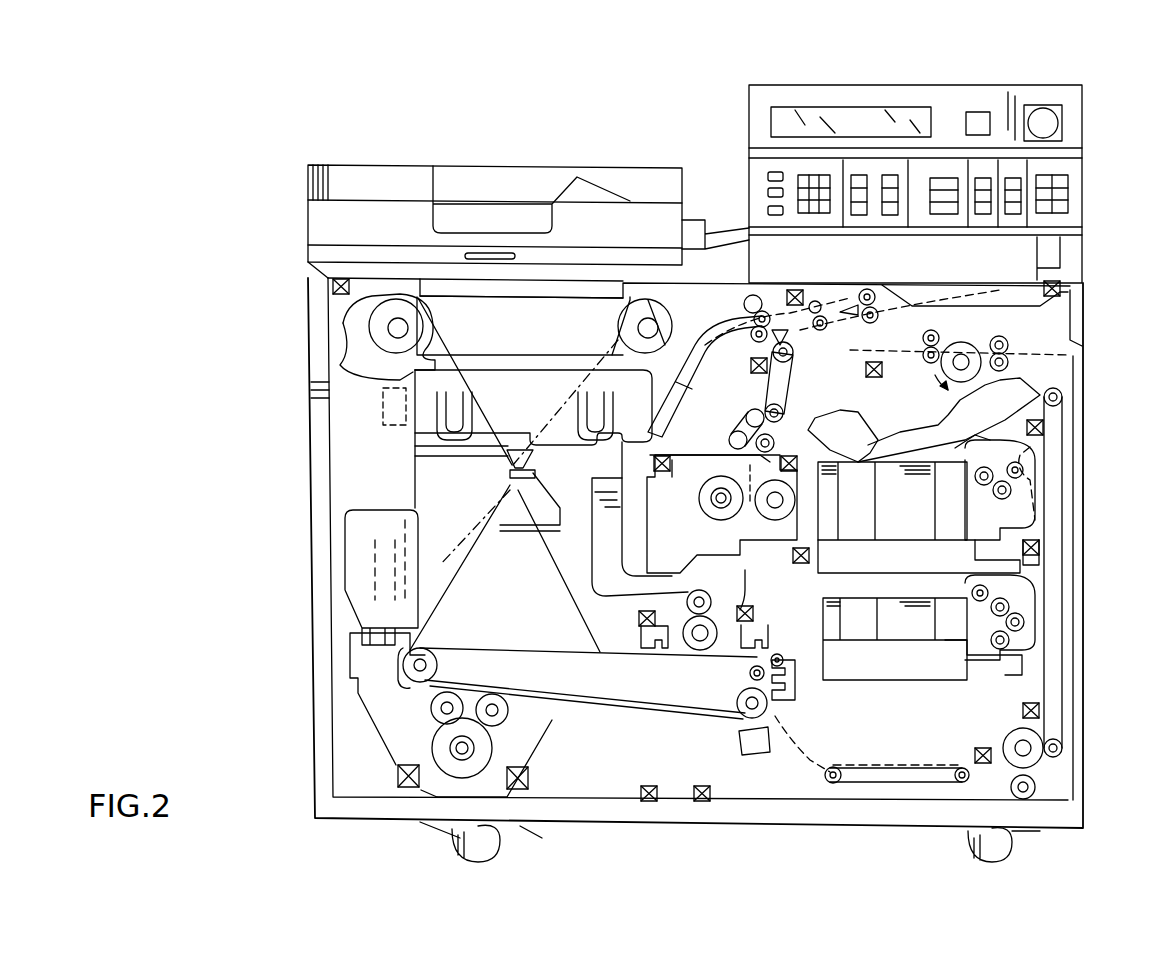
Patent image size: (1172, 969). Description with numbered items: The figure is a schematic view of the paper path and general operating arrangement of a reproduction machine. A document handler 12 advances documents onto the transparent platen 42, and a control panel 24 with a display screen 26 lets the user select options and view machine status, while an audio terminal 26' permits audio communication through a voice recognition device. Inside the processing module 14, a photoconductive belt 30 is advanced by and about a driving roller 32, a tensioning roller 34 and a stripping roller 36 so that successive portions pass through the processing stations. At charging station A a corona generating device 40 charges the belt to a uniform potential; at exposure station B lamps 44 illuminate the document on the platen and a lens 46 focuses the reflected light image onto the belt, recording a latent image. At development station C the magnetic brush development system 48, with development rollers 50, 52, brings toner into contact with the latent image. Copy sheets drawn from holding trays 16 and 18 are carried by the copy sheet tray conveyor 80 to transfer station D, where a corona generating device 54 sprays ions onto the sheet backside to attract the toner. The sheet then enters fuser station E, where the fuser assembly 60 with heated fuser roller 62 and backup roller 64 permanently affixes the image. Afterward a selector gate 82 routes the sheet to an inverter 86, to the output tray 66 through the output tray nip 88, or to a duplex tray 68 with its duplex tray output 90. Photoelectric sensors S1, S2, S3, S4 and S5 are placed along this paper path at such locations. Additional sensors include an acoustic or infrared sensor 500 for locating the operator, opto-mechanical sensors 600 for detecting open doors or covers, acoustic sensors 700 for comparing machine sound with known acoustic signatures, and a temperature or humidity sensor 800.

The document handler 12 is at (424, 158).
The processing module 14 is at (745, 268).
The control panel 24 is at (968, 80).
The display screen 26 is at (851, 83).
The audio terminal 26' is at (1082, 105).
The acoustic or infrared sensor 500 is at (983, 110).
The opto-mechanical sensor 600 is at (340, 285).
The transparent platen 42 is at (600, 283).
The inverter 86 is at (697, 332).
The photoelectric sensor S4 is at (789, 290).
The output tray nip 88 is at (822, 316).
The selector gate 82 is at (786, 343).
The output tray 66 is at (1005, 310).
The duplex tray 68 is at (1025, 395).
The temperature or humidity sensor 800 is at (875, 378).
The photoelectric sensor S3 is at (750, 366).
The fuser station E is at (714, 445).
The duplex tray output 90 is at (1060, 448).
The lamps 44 is at (390, 430).
The heated fuser roller 62 is at (718, 498).
The backup roller 64 is at (776, 498).
The photoelectric sensor S5 is at (1030, 420).
The fuser assembly 60 is at (700, 535).
The photoelectric sensor S2 is at (705, 548).
The acoustic sensor 700 is at (812, 556).
The copy sheet holding tray 16 is at (848, 585).
The lens 46 is at (548, 525).
The exposure station B is at (495, 600).
The tensioning roller 34 is at (432, 655).
The belt 30 is at (530, 652).
The charging station A is at (630, 632).
The corona generating device 40 is at (662, 658).
The stripping roller 36 is at (748, 674).
The corona generating device 54 is at (795, 688).
The copy sheet tray conveyor 80 is at (1063, 637).
The copy sheet holding tray 18 is at (880, 700).
The magnetic brush development roller 50 is at (431, 709).
The magnetic brush development roller 52 is at (508, 711).
The driving roller 32 is at (735, 715).
The transfer station D is at (784, 746).
The photoelectric sensor S1 is at (1022, 716).
The development station C is at (390, 775).
The magnetic brush development system 48 is at (428, 790).